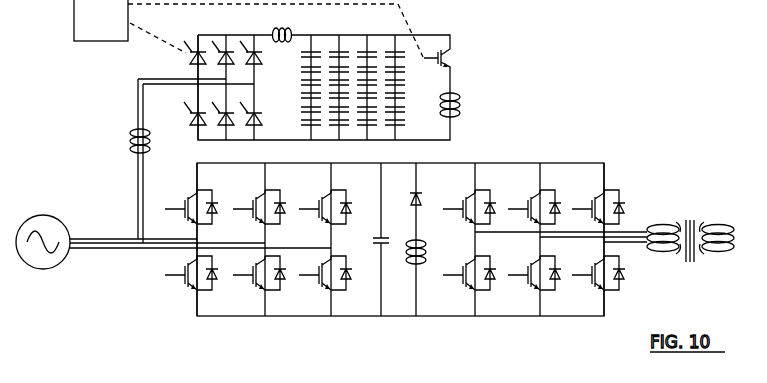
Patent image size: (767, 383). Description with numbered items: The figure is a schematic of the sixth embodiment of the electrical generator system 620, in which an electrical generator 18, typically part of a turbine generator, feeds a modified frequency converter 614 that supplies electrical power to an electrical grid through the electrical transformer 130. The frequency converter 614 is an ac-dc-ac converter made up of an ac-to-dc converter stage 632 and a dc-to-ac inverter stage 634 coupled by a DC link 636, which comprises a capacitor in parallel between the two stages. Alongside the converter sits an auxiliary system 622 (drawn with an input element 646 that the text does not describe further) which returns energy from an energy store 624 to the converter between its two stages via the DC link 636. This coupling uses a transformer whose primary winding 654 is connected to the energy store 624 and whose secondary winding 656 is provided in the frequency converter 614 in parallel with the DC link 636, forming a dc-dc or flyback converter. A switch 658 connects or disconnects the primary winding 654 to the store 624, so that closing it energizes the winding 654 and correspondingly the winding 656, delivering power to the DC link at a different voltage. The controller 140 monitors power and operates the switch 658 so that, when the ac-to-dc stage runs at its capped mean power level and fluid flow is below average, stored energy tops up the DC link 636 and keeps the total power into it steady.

The controller 140 is at (118, 25).
The thyristor rectifier 646 is at (217, 36).
The energy store 624 is at (357, 36).
The switch 658 is at (442, 48).
The auxiliary system 622 is at (470, 50).
The winding 654 is at (459, 108).
The electrical generator 18 is at (42, 270).
The frequency converter 614 is at (592, 164).
The ac-to-dc converter stage 632 is at (238, 318).
The dc-to-ac inverter stage 634 is at (556, 318).
The DC link 636 is at (381, 285).
The winding 656 is at (420, 262).
The generator system 620 is at (638, 186).
The electrical transformer 130 is at (718, 225).